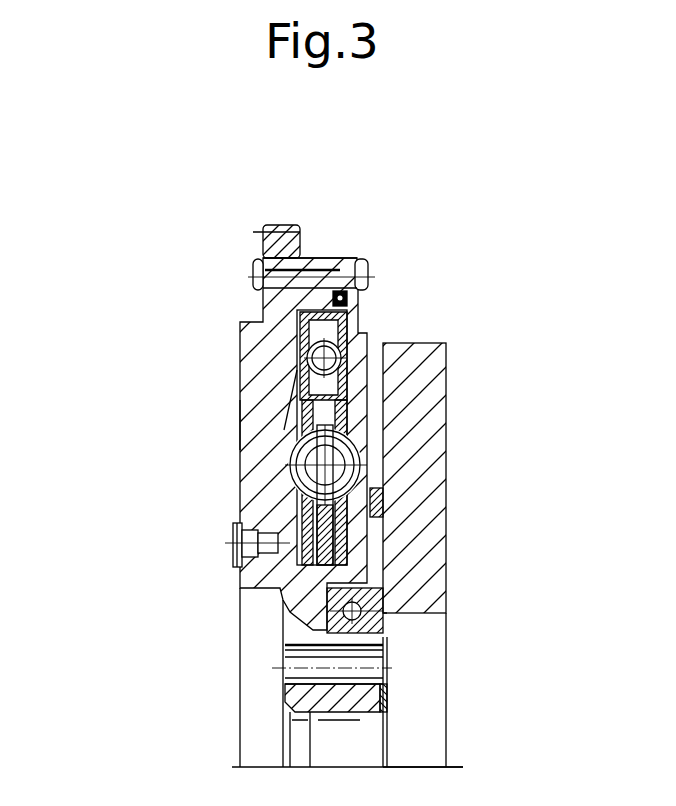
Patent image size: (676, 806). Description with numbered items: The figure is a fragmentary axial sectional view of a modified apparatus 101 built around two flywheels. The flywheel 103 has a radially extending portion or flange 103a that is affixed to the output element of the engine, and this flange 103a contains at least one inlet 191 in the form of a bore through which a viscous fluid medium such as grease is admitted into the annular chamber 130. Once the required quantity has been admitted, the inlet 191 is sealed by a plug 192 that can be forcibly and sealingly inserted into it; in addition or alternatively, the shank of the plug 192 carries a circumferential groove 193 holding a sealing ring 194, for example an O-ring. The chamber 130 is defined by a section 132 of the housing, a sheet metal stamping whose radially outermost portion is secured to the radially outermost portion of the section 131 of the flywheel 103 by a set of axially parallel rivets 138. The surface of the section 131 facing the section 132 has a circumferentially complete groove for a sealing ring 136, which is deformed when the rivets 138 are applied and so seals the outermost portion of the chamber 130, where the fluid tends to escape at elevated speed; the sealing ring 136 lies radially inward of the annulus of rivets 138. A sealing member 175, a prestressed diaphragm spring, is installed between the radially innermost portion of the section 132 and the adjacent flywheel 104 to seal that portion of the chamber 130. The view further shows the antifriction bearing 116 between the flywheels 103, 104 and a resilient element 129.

The modified apparatus 101 is at (410, 203).
The flywheel 103 is at (262, 386).
The radially extending portion or flange 103a is at (262, 423).
The flywheel 104 is at (418, 543).
The antifriction bearing 116 is at (388, 647).
The resilient element 129 is at (388, 615).
The annular chamber 130 is at (288, 452).
The section of the flywheel 131 is at (302, 255).
The section of the housing 132 is at (360, 333).
The sealing ring 136 is at (373, 289).
The rivets 138 is at (345, 256).
The sealing member 175 is at (381, 500).
The inlet 191 is at (233, 528).
The plug 192 is at (233, 540).
The circumferential groove 193 is at (235, 552).
The sealing ring 194 is at (190, 567).